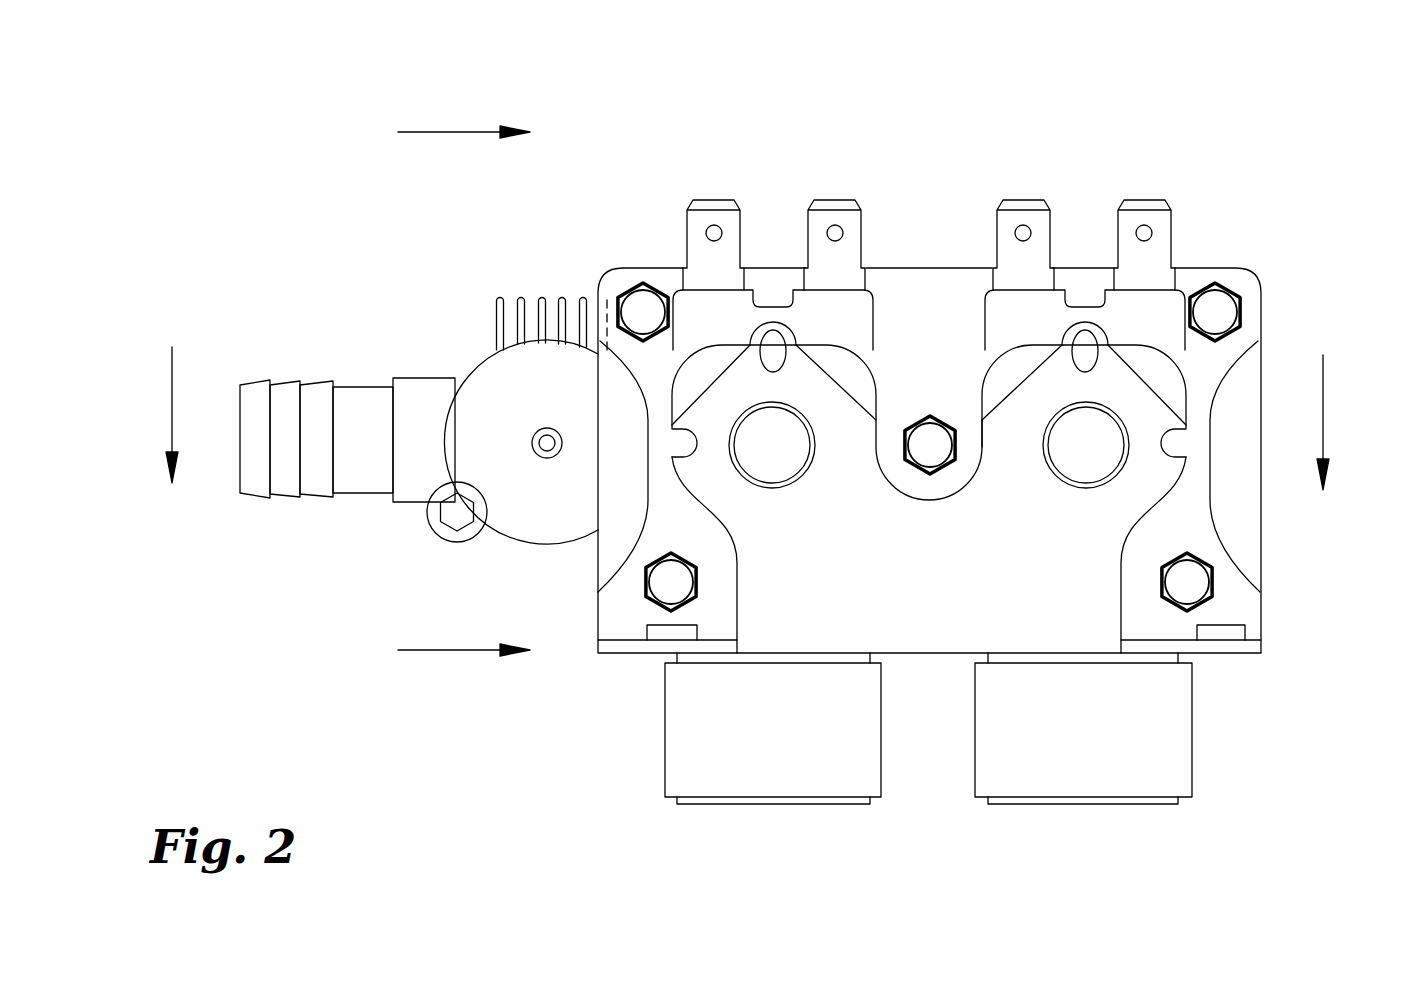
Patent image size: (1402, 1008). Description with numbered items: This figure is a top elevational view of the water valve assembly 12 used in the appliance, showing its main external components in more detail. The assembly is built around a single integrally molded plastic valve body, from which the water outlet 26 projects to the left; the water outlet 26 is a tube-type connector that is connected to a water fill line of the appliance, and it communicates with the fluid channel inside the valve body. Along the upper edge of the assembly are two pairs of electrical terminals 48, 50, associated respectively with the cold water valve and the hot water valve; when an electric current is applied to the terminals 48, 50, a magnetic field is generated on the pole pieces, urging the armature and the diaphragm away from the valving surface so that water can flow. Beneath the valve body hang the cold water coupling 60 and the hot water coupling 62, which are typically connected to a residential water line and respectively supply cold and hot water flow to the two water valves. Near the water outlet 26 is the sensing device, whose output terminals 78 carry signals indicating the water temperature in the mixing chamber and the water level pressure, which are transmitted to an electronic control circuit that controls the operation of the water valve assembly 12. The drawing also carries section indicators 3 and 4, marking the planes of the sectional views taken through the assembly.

The water valve assembly 12 is at (1318, 136).
The water outlet 26 is at (240, 432).
The output terminals 78 is at (602, 300).
The terminals 50 is at (833, 200).
The terminals 48 is at (1145, 200).
The hot water coupling 62 is at (687, 743).
The cold water coupling 60 is at (1165, 745).
The section line 3- 3 is at (172, 401).
The section line 4- 4 is at (455, 132).